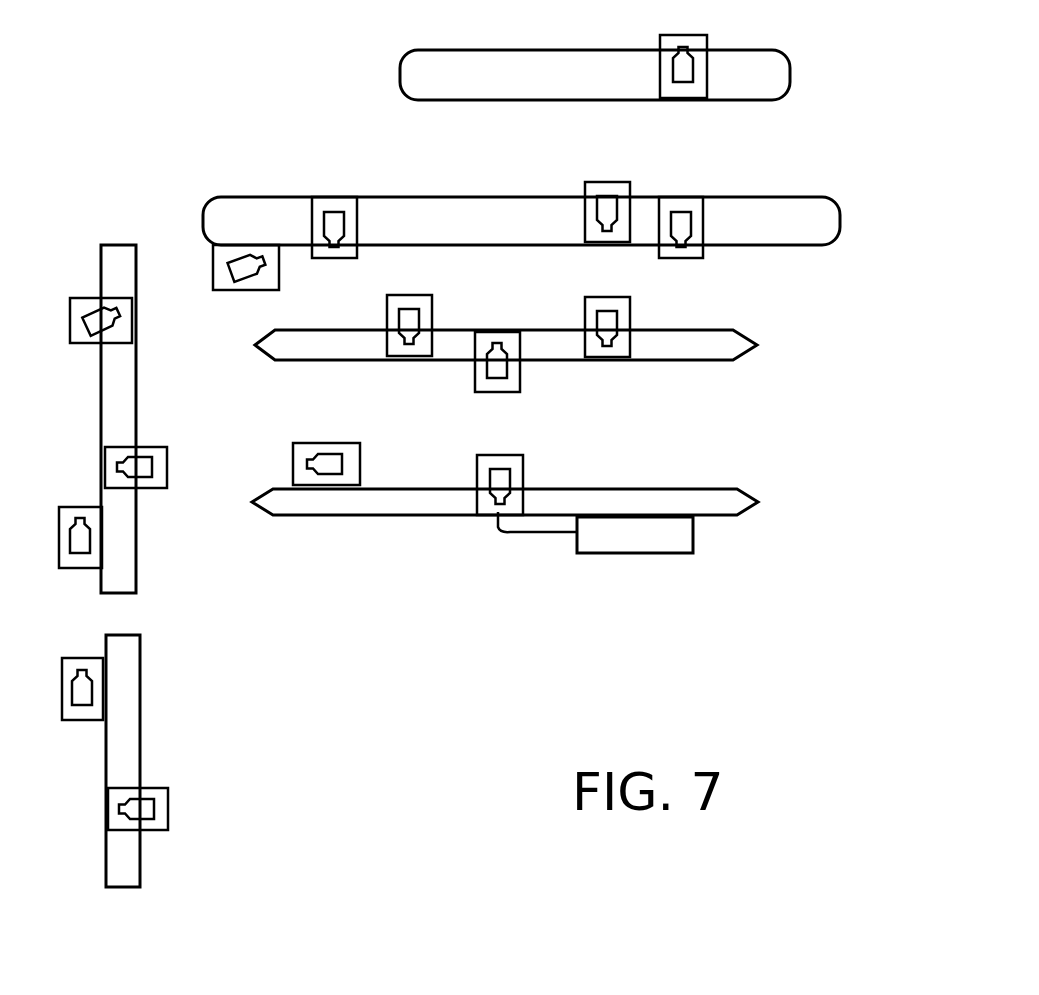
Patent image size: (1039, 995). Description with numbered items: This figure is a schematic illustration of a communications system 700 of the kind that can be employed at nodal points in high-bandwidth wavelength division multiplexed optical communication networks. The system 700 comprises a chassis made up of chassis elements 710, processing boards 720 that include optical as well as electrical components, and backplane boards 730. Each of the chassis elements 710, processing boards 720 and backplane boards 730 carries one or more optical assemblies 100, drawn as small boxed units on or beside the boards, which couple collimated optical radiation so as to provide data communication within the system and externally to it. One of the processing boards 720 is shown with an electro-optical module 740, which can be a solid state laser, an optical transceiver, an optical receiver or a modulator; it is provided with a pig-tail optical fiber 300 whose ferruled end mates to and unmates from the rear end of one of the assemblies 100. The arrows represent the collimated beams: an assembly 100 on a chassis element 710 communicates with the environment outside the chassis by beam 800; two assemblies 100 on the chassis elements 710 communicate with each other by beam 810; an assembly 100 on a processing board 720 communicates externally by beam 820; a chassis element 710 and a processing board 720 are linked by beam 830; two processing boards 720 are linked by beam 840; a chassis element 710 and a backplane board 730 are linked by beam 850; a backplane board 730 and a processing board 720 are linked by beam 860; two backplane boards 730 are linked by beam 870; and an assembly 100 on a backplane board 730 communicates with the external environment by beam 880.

The system 700 is at (142, 72).
The chassis elements 710 is at (546, 90).
The processing boards 720 is at (670, 348).
The backplane boards 730 is at (113, 278).
The electro-optical module 740 is at (608, 555).
The pig-tail optical fiber 300 is at (497, 519).
The assembly 100 is at (223, 260).
The collimated radiation beam 800 is at (333, 178).
The collimated beam of optical radiation 810 is at (683, 118).
The collimated radiation beam 820 is at (410, 250).
The collimated beam of optical radiation 830 is at (608, 260).
The collimated radiation beam 840 is at (497, 406).
The collimated beam of optical radiation 850 is at (150, 302).
The collimated beam of optical radiation 860 is at (185, 467).
The collimated beam of optical radiation 870 is at (83, 585).
The collimated radiation beam 880 is at (190, 805).